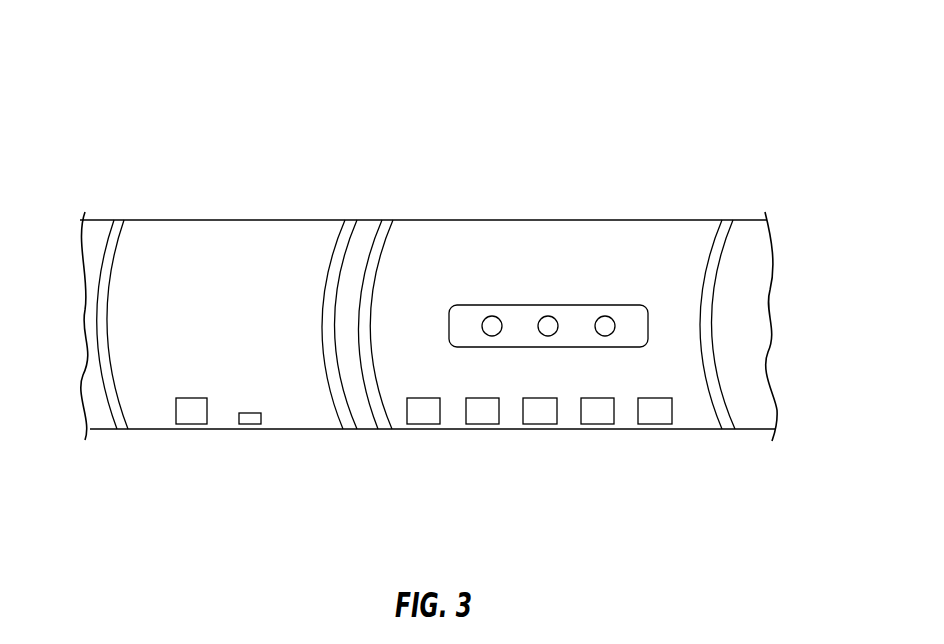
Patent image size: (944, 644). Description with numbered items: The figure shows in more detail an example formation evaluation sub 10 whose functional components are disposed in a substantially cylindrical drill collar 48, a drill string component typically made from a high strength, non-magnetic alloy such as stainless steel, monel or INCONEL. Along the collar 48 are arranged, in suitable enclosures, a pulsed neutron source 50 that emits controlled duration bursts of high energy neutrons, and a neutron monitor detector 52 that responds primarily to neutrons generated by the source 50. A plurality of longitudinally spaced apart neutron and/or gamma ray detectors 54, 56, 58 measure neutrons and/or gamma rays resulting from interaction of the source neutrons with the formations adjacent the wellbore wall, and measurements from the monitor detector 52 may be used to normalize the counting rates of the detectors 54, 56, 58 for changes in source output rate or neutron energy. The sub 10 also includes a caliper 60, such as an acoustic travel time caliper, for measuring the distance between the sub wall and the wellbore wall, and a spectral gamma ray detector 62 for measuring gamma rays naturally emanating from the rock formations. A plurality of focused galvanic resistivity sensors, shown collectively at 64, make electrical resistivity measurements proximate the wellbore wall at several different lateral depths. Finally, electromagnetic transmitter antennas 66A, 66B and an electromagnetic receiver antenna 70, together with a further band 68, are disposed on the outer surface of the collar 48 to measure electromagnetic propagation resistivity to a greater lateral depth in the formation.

The formation evaluation sub 10 is at (658, 148).
The drill collar 48 is at (269, 243).
The pulsed neutron source 50 is at (655, 412).
The neutron monitor detector 52 is at (598, 412).
The neutron and/or gamma ray detector 54 is at (540, 412).
The neutron and/or gamma ray detector 56 is at (482, 412).
The neutron and/or gamma ray detector 58 is at (424, 412).
The caliper 60 is at (250, 416).
The spectral gamma ray detector 62 is at (190, 412).
The focused galvanic resistivity sensors 64 is at (560, 305).
The electromagnetic transmitter antenna 66A is at (118, 225).
The electromagnetic transmitter antenna 66B is at (720, 232).
The marker band 68 is at (377, 227).
The electromagnetic receiver antenna 70 is at (338, 228).